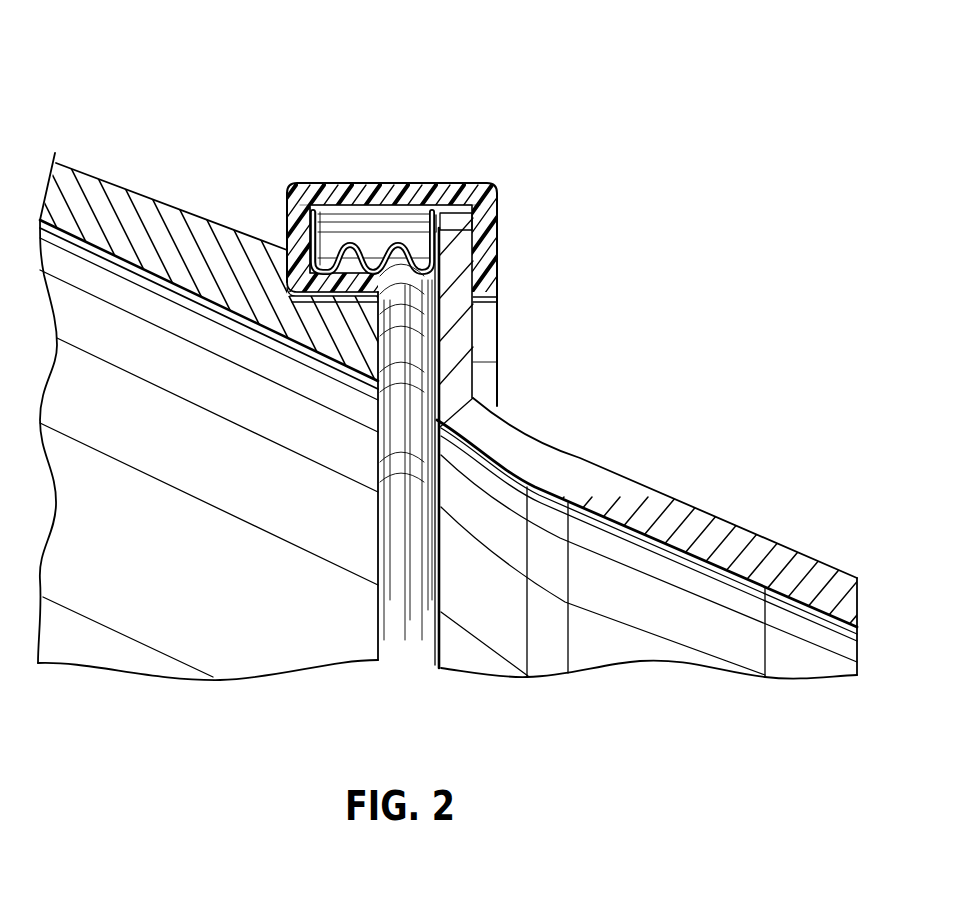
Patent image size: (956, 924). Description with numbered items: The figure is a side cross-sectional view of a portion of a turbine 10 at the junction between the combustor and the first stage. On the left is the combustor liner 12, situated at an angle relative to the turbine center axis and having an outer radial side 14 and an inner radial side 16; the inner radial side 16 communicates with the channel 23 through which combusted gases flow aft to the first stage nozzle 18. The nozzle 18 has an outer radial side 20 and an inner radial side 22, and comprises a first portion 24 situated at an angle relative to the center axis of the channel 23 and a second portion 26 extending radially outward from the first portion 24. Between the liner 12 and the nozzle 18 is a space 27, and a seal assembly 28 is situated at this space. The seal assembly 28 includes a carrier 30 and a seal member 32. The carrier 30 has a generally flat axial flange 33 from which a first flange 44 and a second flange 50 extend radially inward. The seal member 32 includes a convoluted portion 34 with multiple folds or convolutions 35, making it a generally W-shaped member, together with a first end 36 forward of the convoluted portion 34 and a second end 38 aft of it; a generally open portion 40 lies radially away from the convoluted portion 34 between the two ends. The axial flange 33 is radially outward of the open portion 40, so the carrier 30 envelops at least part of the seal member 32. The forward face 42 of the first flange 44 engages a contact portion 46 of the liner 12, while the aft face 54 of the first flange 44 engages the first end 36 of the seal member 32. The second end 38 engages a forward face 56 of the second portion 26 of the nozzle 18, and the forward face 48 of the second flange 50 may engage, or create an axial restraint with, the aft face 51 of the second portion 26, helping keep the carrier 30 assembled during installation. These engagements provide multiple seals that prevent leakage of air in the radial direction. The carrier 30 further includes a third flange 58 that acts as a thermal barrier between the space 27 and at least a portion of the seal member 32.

The turbine 10 is at (210, 98).
The liner 12 is at (107, 180).
The outer radial side 14 is at (261, 271).
The inner radial side 16 is at (136, 268).
The first stage nozzle 18 is at (717, 508).
The outer radial side 20 is at (686, 536).
The inner radial side 22 is at (633, 520).
The channel 23 is at (208, 416).
The first portion 24 is at (637, 502).
The second portion 26 is at (452, 320).
The space 27 is at (378, 672).
The seal assembly 28 is at (434, 181).
The carrier 30 is at (395, 272).
The seal member 32 is at (437, 217).
The axial flange 33 is at (452, 192).
The convoluted portion 34 is at (358, 217).
The convolutions 35 is at (386, 252).
The first end 36 is at (288, 250).
The second end 38 is at (487, 234).
The open portion 40 is at (345, 222).
The forward face 42 is at (292, 222).
The first flange 44 is at (288, 222).
The contact portion 46 is at (304, 302).
The forward face 48 is at (485, 283).
The second flange 50 is at (457, 271).
The aft face 51 is at (427, 347).
The aft face 54 is at (300, 188).
The forward face 56 is at (439, 338).
The third flange 58 is at (342, 293).